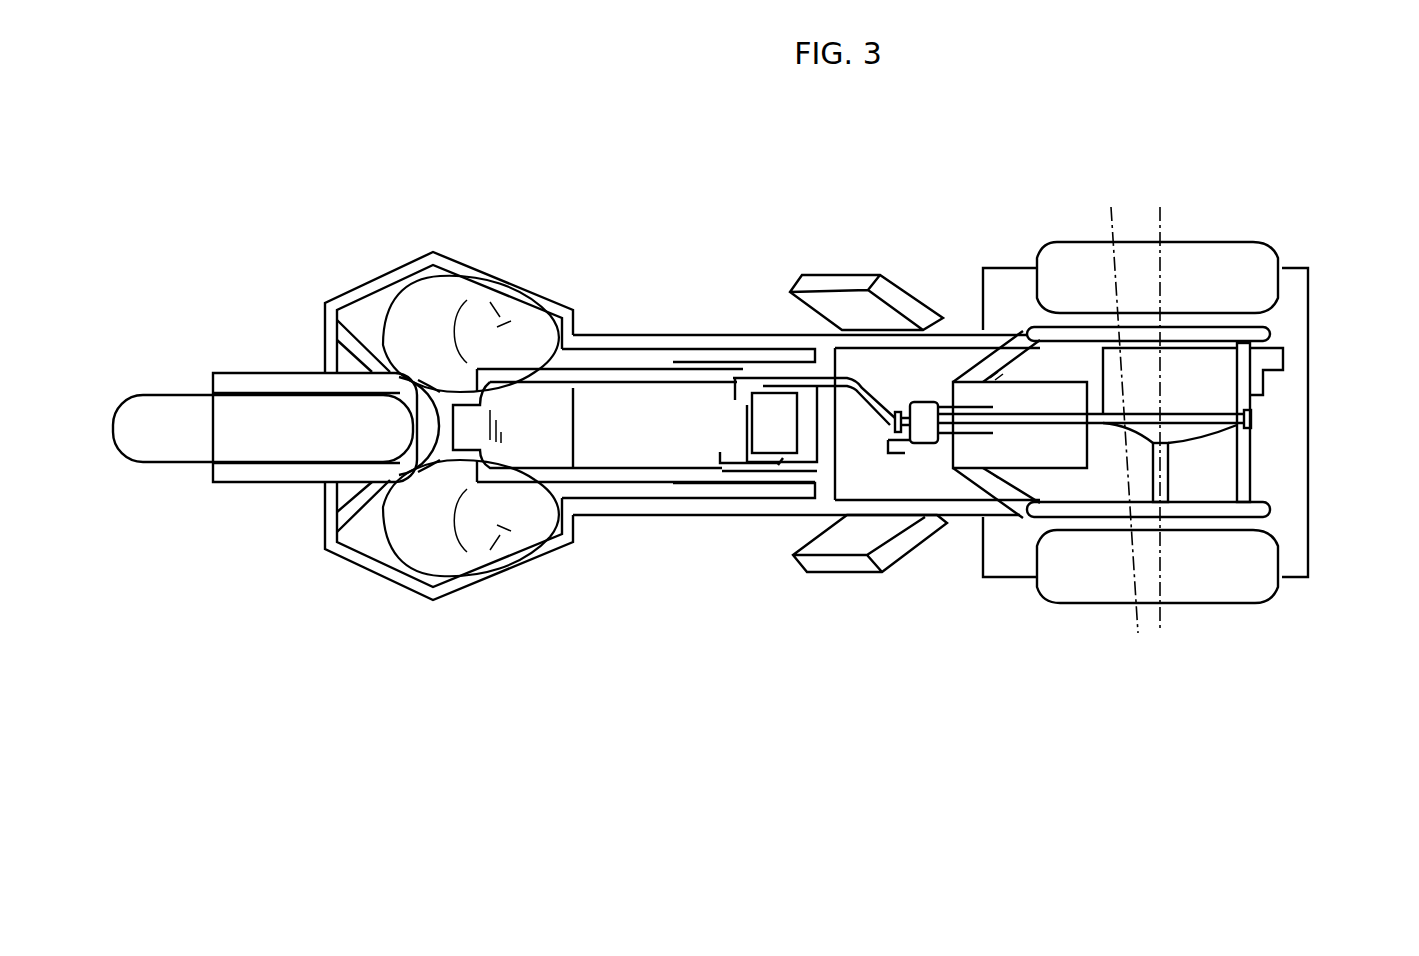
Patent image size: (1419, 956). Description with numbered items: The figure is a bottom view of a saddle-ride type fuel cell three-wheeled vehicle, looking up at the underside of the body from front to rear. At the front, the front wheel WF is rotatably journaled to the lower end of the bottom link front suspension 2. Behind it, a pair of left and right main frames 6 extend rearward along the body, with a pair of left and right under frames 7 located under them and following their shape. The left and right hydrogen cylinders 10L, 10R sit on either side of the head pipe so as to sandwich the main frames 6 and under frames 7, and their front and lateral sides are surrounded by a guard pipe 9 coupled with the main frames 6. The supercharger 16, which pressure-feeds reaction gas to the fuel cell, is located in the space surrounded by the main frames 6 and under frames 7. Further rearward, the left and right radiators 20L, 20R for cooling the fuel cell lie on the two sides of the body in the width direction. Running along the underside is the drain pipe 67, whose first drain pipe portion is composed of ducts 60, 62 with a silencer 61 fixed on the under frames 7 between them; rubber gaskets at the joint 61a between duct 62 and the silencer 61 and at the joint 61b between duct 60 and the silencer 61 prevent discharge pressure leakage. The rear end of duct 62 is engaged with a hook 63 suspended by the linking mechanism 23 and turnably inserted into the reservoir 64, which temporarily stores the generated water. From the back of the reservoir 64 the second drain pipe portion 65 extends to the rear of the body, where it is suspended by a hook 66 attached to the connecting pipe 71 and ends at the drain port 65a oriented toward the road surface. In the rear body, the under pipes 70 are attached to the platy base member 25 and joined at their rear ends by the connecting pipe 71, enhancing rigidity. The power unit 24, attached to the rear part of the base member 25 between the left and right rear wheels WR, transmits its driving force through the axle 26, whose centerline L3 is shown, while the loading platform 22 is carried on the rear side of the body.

The bottom link front suspension 2 is at (262, 368).
The main frame 6 is at (730, 348).
The under frame 7 is at (680, 345).
The guard pipe 9 is at (347, 288).
The left hydrogen cylinder 10L is at (428, 300).
The right hydrogen cylinder 10R is at (460, 562).
The supercharger 16 is at (574, 412).
The left radiator 20L is at (837, 285).
The right radiator 20R is at (828, 567).
The loading platform 22 is at (1315, 552).
The linking mechanism 23 is at (862, 452).
The power unit 24 is at (1203, 350).
The base member 25 is at (1036, 455).
The axle 26 is at (1145, 555).
The duct 60 is at (760, 463).
The silencer 61 is at (755, 408).
The joint 61a is at (762, 386).
The joint 61b is at (790, 464).
The duct 62 is at (888, 400).
The hook 63 is at (905, 445).
The reservoir 64 is at (940, 400).
The second drain pipe portion 65 is at (1000, 390).
The drain port 65a is at (1265, 416).
The hook 66 is at (1200, 395).
The drain pipe 67 is at (1134, 394).
The under pipe 70 is at (1092, 643).
The connecting pipe 71 is at (1258, 488).
The centerline L3 is at (1162, 615).
The front wheel WF is at (163, 448).
The rear wheel WR is at (1265, 262).